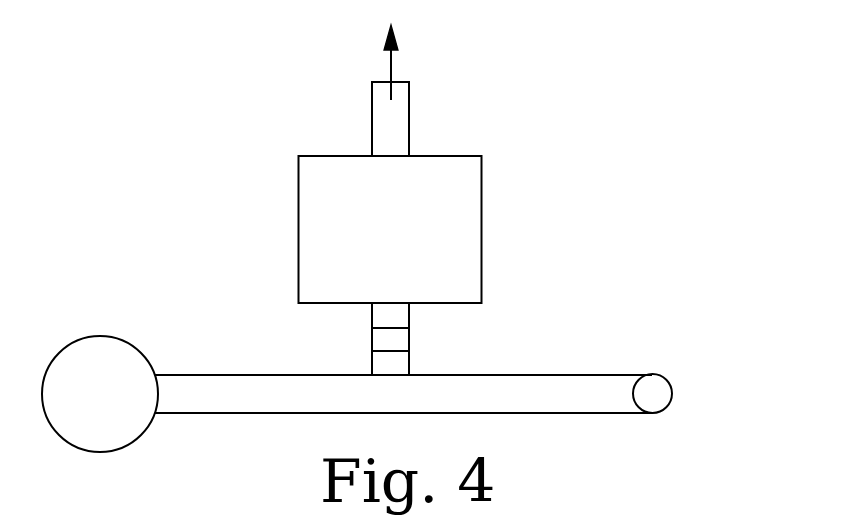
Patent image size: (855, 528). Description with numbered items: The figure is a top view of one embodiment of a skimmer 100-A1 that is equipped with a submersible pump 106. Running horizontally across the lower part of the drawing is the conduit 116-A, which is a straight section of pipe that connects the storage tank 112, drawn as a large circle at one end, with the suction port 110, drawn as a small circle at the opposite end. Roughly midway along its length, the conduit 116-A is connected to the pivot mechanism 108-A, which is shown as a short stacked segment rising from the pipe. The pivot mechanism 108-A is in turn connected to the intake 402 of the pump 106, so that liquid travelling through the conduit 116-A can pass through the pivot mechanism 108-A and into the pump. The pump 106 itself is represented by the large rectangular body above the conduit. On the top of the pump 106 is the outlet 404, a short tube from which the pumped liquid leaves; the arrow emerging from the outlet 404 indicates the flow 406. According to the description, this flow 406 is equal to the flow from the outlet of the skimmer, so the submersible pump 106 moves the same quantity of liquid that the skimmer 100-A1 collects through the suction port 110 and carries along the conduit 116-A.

The submersible pump 106 is at (482, 217).
The outlet 404 is at (372, 126).
The flow 406 is at (392, 66).
The intake 402 is at (409, 313).
The pivot mechanism 108-A is at (409, 339).
The conduit 116-A is at (248, 375).
The storage tank 112 is at (138, 345).
The suction port 110 is at (655, 375).
The skimmer 100-A1 is at (672, 239).